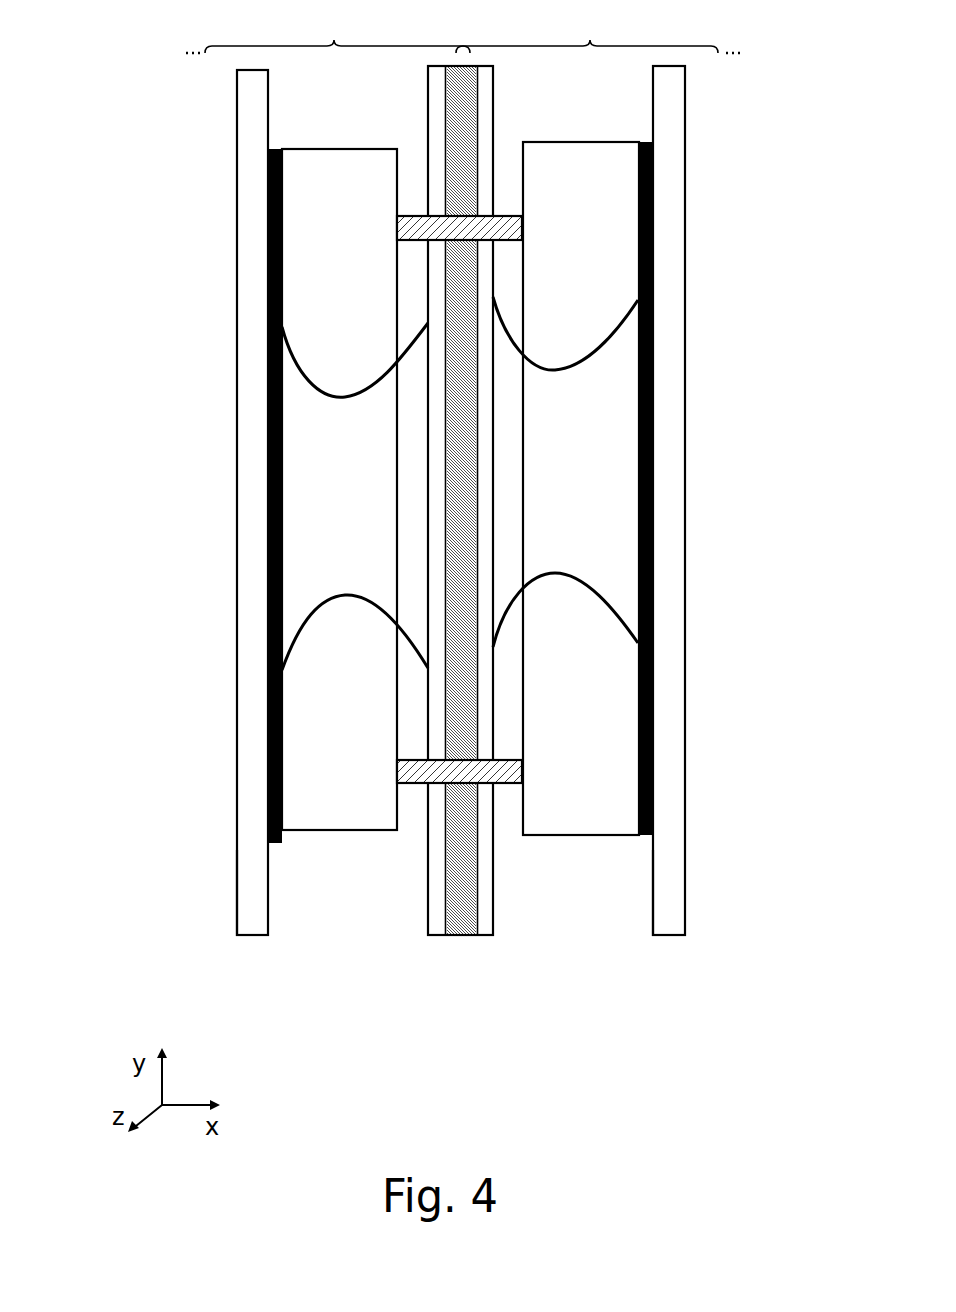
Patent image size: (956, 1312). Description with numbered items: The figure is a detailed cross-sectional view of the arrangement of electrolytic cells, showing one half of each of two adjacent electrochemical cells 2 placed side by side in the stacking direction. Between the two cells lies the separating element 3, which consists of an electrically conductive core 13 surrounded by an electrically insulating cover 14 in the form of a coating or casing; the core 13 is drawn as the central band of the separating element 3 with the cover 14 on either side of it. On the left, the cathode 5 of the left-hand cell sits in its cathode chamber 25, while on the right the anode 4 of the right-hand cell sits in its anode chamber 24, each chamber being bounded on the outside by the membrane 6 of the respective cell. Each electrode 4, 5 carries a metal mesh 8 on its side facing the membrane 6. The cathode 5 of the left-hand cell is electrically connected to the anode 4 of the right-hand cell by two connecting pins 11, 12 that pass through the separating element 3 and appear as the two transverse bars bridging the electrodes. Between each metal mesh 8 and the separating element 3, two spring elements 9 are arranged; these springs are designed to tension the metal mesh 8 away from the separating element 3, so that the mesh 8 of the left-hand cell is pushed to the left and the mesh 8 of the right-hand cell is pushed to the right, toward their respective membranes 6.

The electrochemical cell 2 is at (334, 40).
The separating element 3 is at (461, 554).
The anode 4 is at (573, 142).
The cathode 5 is at (338, 148).
The membrane 6 is at (247, 508).
The metal mesh 8 is at (280, 148).
The spring element 9 is at (298, 360).
The connecting pin 11 is at (493, 514).
The seal 12 is at (500, 228).
The core 13 is at (460, 927).
The cover 14 is at (430, 923).
The anode chamber 24 is at (618, 862).
The cathode chamber 25 is at (298, 863).